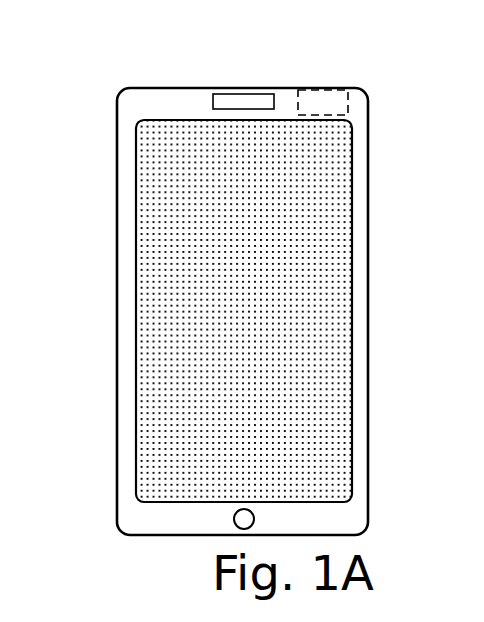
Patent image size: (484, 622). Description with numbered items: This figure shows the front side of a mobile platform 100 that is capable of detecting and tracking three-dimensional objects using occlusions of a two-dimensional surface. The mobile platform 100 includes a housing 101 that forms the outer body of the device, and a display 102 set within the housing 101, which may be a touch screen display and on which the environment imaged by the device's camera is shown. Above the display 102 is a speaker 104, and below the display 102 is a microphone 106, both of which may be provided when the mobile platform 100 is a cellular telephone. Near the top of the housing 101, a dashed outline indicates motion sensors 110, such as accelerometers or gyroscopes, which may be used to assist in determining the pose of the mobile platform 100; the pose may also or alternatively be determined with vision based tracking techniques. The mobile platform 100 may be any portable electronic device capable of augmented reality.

The mobile platform 100 is at (128, 48).
The housing 101 is at (117, 311).
The display 102 is at (352, 253).
The speaker 104 is at (213, 99).
The microphone 106 is at (237, 513).
The motion sensors 110 is at (298, 100).